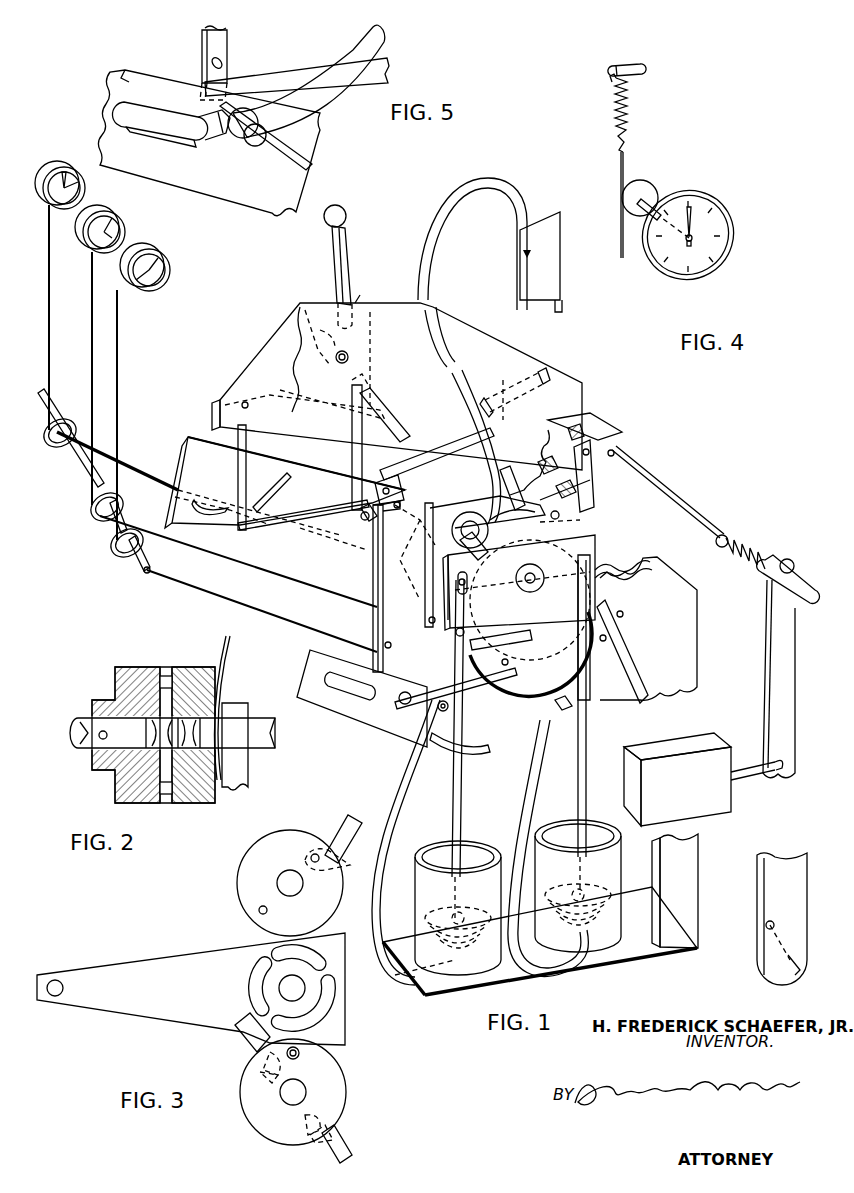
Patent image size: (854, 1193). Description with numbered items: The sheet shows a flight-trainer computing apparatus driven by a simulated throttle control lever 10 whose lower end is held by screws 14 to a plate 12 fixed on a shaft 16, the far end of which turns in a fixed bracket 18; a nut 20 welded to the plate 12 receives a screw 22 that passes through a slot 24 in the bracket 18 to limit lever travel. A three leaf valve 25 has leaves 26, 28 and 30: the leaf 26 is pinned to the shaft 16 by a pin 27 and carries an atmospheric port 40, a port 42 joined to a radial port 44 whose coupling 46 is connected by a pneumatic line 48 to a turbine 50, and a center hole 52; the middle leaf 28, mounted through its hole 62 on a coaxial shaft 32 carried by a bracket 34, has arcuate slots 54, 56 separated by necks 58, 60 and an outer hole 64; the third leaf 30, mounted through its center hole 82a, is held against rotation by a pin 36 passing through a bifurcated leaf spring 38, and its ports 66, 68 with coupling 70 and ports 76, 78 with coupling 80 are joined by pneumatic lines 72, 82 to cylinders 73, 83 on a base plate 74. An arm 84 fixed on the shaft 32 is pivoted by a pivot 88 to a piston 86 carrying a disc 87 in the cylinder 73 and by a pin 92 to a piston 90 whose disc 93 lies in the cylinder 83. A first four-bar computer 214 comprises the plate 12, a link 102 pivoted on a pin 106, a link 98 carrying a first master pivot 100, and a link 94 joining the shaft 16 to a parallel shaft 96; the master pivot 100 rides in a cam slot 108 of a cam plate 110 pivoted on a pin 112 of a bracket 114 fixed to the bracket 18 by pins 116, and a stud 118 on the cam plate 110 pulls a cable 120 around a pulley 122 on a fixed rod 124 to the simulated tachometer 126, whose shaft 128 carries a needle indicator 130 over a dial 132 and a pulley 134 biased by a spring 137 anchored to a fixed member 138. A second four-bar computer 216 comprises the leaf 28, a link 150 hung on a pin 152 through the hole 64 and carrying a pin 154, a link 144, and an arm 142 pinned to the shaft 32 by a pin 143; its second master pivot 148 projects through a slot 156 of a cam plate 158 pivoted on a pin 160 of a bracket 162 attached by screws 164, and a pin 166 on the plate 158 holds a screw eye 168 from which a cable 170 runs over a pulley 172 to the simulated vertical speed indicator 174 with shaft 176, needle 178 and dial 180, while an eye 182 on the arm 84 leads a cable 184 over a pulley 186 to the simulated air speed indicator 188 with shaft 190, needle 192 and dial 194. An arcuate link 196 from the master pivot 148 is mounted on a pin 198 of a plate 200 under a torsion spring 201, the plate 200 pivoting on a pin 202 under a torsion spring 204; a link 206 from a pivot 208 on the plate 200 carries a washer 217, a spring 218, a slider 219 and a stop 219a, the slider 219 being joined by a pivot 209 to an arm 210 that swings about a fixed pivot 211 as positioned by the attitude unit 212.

In FIG. 1, the lever 10 is at (345, 240).
In FIG. 1, the plate 12 is at (270, 370).
In FIG. 1, the screws 14 is at (342, 300).
In FIG. 2, the shaft 16 is at (78, 727).
In FIG. 1, the shaft 16 is at (385, 410).
In FIG. 1, the bracket 18 is at (448, 322).
In FIG. 1, the nut 20 is at (310, 300).
In FIG. 1, the screw 22 is at (348, 360).
In FIG. 1, the slot 24 is at (320, 345).
In FIG. 2, the three leaf valve 25 is at (108, 665).
In FIG. 3, the three leaf valve 25 is at (200, 923).
In FIG. 1, the three leaf valve 25 is at (497, 490).
In FIG. 2, the leaf 26 is at (125, 683).
In FIG. 3, the leaf 26 is at (280, 845).
In FIG. 1, the leaf 26 is at (465, 512).
In FIG. 2, the pin 27 is at (100, 733).
In FIG. 2, the leaf 28 is at (163, 675).
In FIG. 3, the leaf 28 is at (172, 958).
In FIG. 1, the leaf 28 is at (450, 505).
In FIG. 2, the leaf 30 is at (215, 800).
In FIG. 3, the leaf 30 is at (333, 1116).
In FIG. 1, the leaf 30 is at (466, 582).
In FIG. 2, the shaft 32 is at (258, 742).
In FIG. 1, the shaft 32 is at (528, 565).
In FIG. 1, the bracket 34 is at (682, 677).
In FIG. 3, the pin 36 is at (300, 1053).
In FIG. 1, the pin 36 is at (560, 513).
In FIG. 2, the leaf spring 38 is at (222, 658).
In FIG. 1, the leaf spring 38 is at (580, 500).
In FIG. 3, the port 40 is at (259, 910).
In FIG. 3, the port 42 is at (315, 853).
In FIG. 3, the port 44 is at (340, 862).
In FIG. 3, the coupling 46 is at (345, 830).
In FIG. 1, the coupling 46 is at (503, 468).
In FIG. 1, the pneumatic line 48 is at (438, 212).
In FIG. 1, the turbine 50 is at (545, 243).
In FIG. 3, the center hole 52 is at (285, 882).
In FIG. 1, the center hole 52 is at (418, 512).
In FIG. 3, the arcuate slot 54 is at (257, 975).
In FIG. 3, the arcuate slot 56 is at (330, 985).
In FIG. 3, the neck 58 is at (268, 1005).
In FIG. 3, the neck 60 is at (318, 962).
In FIG. 3, the center hole 62 is at (297, 986).
In FIG. 3, the hole 64 is at (55, 996).
In FIG. 3, the port 66 is at (262, 1064).
In FIG. 3, the port 68 is at (268, 1076).
In FIG. 3, the coupling 70 is at (255, 1046).
In FIG. 1, the coupling 70 is at (462, 540).
In FIG. 1, the pneumatic line 72 is at (420, 777).
In FIG. 1, the cylinder 73 is at (418, 900).
In FIG. 1, the base plate 74 is at (445, 992).
In FIG. 3, the port 76 is at (318, 1118).
In FIG. 3, the port 78 is at (312, 1136).
In FIG. 3, the coupling 80 is at (333, 1146).
In FIG. 1, the coupling 80 is at (528, 528).
In FIG. 1, the pneumatic line 82 is at (525, 832).
In FIG. 3, the center hole 82a is at (298, 1090).
In FIG. 1, the cylinder 83 is at (607, 930).
In FIG. 1, the arm 84 is at (596, 545).
In FIG. 1, the piston 86 is at (460, 822).
In FIG. 1, the disc 87 is at (405, 988).
In FIG. 1, the pivot 88 is at (466, 596).
In FIG. 1, the piston 90 is at (588, 735).
In FIG. 1, the pin 92 is at (598, 560).
In FIG. 1, the disc 93 is at (572, 932).
In FIG. 1, the link 94 is at (352, 451).
In FIG. 1, the shaft 96 is at (363, 522).
In FIG. 1, the link 98 is at (322, 513).
In FIG. 1, the first master pivot 100 is at (264, 524).
In FIG. 1, the link 102 is at (246, 438).
In FIG. 1, the pin 106 is at (250, 405).
In FIG. 1, the cam slot 108 is at (205, 505).
In FIG. 1, the cam plate 110 is at (212, 450).
In FIG. 1, the pin 112 is at (386, 480).
In FIG. 1, the bracket 114 is at (388, 475).
In FIG. 1, the pins 116 is at (503, 395).
In FIG. 1, the stud 118 is at (420, 575).
In FIG. 1, the cable 120 is at (50, 297).
In FIG. 1, the pulley 122 is at (58, 440).
In FIG. 1, the rod 124 is at (143, 573).
In FIG. 1, the simulated tachometer 126 is at (57, 164).
In FIG. 4, the shaft 128 is at (660, 210).
In FIG. 1, the shaft 128 is at (74, 184).
In FIG. 4, the needle indicator 130 is at (698, 212).
In FIG. 1, the needle indicator 130 is at (70, 178).
In FIG. 4, the dial 132 is at (673, 265).
In FIG. 1, the dial 132 is at (66, 202).
In FIG. 4, the pulley 134 is at (647, 187).
In FIG. 4, the spring 137 is at (630, 101).
In FIG. 4, the fixed member 138 is at (645, 65).
In FIG. 1, the arm 142 is at (515, 640).
In FIG. 1, the pin 143 is at (468, 580).
In FIG. 5, the link 144 is at (285, 80).
In FIG. 1, the link 144 is at (495, 677).
In FIG. 5, the second master pivot 148 is at (262, 136).
In FIG. 1, the second master pivot 148 is at (403, 703).
In FIG. 5, the link 150 is at (212, 46).
In FIG. 1, the link 150 is at (378, 630).
In FIG. 1, the pin 152 is at (395, 525).
In FIG. 5, the pin 154 is at (213, 62).
In FIG. 1, the pin 154 is at (390, 648).
In FIG. 5, the slot 156 is at (135, 115).
In FIG. 1, the slot 156 is at (350, 685).
In FIG. 5, the cam plate 158 is at (130, 70).
In FIG. 1, the cam plate 158 is at (355, 715).
In FIG. 1, the pin 160 is at (578, 665).
In FIG. 1, the bracket 162 is at (560, 690).
In FIG. 1, the screws 164 is at (620, 618).
In FIG. 1, the pin 166 is at (570, 705).
In FIG. 1, the threaded screw eye 168 is at (488, 735).
In FIG. 1, the cable 170 is at (263, 613).
In FIG. 1, the pulley 172 is at (120, 553).
In FIG. 1, the simulated vertical speed indicator 174 is at (172, 265).
In FIG. 1, the shaft 176 is at (160, 290).
In FIG. 1, the indicating needle 178 is at (148, 290).
In FIG. 1, the dial 180 is at (168, 278).
In FIG. 1, the eye 182 is at (428, 621).
In FIG. 1, the cable 184 is at (92, 323).
In FIG. 1, the pulley 186 is at (96, 512).
In FIG. 1, the simulated air speed indicator 188 is at (133, 218).
In FIG. 1, the shaft 190 is at (130, 229).
In FIG. 1, the needle 192 is at (116, 222).
In FIG. 1, the dial 194 is at (106, 240).
In FIG. 5, the arcuate link 196 is at (366, 44).
In FIG. 1, the arcuate link 196 is at (585, 520).
In FIG. 1, the pin 198 is at (592, 450).
In FIG. 1, the plate 200 is at (590, 424).
In FIG. 1, the torsion spring 201 is at (580, 426).
In FIG. 1, the pin 202 is at (544, 456).
In FIG. 1, the torsion spring 204 is at (540, 466).
In FIG. 1, the link 206 is at (660, 485).
In FIG. 1, the pivot 208 is at (615, 452).
In FIG. 1, the pivot 209 is at (790, 558).
In FIG. 1, the arm 210 is at (772, 700).
In FIG. 1, the fixed pivot 211 is at (745, 925).
In FIG. 1, the attitude unit 212 is at (712, 806).
In FIG. 1, the four-bar computer 214 is at (214, 538).
In FIG. 1, the four-bar computer 216 is at (368, 608).
In FIG. 1, the washer 217 is at (716, 540).
In FIG. 1, the spring 218 is at (738, 553).
In FIG. 1, the slider 219 is at (775, 582).
In FIG. 1, the stop 219a is at (793, 615).